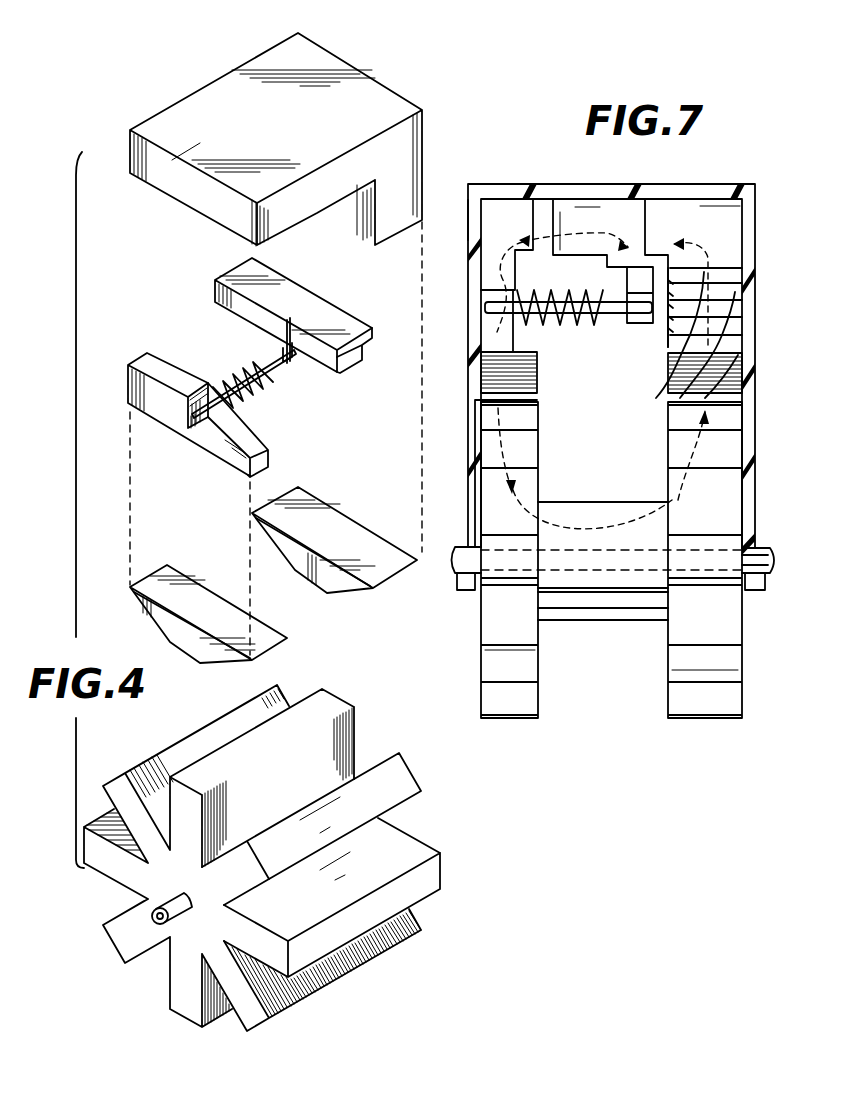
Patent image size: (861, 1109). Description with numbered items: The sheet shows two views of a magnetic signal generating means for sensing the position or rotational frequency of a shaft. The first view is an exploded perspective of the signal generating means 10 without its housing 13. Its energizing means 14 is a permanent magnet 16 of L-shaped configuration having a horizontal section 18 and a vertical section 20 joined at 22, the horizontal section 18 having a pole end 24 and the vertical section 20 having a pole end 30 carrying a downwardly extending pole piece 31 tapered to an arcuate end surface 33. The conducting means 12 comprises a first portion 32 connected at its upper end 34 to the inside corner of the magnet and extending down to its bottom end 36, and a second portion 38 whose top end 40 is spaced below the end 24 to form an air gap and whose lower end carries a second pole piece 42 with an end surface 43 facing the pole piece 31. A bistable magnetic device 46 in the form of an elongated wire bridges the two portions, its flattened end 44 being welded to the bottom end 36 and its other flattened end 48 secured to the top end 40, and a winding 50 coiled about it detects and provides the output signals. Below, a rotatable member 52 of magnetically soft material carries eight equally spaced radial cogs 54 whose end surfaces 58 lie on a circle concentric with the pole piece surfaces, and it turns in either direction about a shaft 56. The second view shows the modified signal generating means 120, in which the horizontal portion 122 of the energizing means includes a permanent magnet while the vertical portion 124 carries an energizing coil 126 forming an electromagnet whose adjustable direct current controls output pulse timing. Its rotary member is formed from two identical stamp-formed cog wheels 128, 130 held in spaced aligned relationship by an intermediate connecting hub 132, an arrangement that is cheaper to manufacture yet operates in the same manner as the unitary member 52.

In FIG. 4, the signal generating means 10 is at (90, 131).
In FIG. 4, the conducting means 12 is at (273, 450).
In FIG. 7, the housing 13 is at (465, 207).
In FIG. 4, the energizing means 14 is at (308, 53).
In FIG. 4, the permanent magnet 16 is at (385, 97).
In FIG. 4, the horizontal section 18 is at (207, 93).
In FIG. 4, the vertical section 20 is at (400, 197).
In FIG. 4, the junction of sections 22 is at (385, 153).
In FIG. 4, the end of first section 24 is at (187, 155).
In FIG. 4, the end of second section 30 is at (393, 217).
In FIG. 4, the pole piece 31 is at (365, 485).
In FIG. 4, the first portion 32 is at (340, 280).
In FIG. 4, the arcuate end surface 33 is at (307, 583).
In FIG. 4, the upper end 34 is at (357, 347).
In FIG. 4, the bottom end 36 is at (301, 376).
In FIG. 4, the second portion 38 is at (133, 383).
In FIG. 4, the top end 40 is at (193, 400).
In FIG. 4, the second pole piece 42 is at (150, 613).
In FIG. 4, the end surface 43 is at (178, 652).
In FIG. 4, the flattened end 44 is at (287, 320).
In FIG. 4, the bistable magnetic device 46 is at (293, 365).
In FIG. 4, the other flattened end 48 is at (190, 428).
In FIG. 4, the winding 50 is at (222, 365).
In FIG. 4, the rotatable member 52 is at (416, 718).
In FIG. 4, the cogs 54 is at (415, 847).
In FIG. 4, the shaft 56 is at (177, 903).
In FIG. 4, the end surface of cog 58 is at (437, 872).
In FIG. 7, the signal generating means 120 is at (774, 167).
In FIG. 7, the horizontal portion 122 is at (657, 210).
In FIG. 7, the vertical portion 124 is at (707, 380).
In FIG. 7, the energizing coil 126 is at (670, 403).
In FIG. 7, the cog wheel 128 is at (685, 667).
In FIG. 7, the cog wheel 130 is at (518, 662).
In FIG. 7, the connecting hub 132 is at (593, 608).